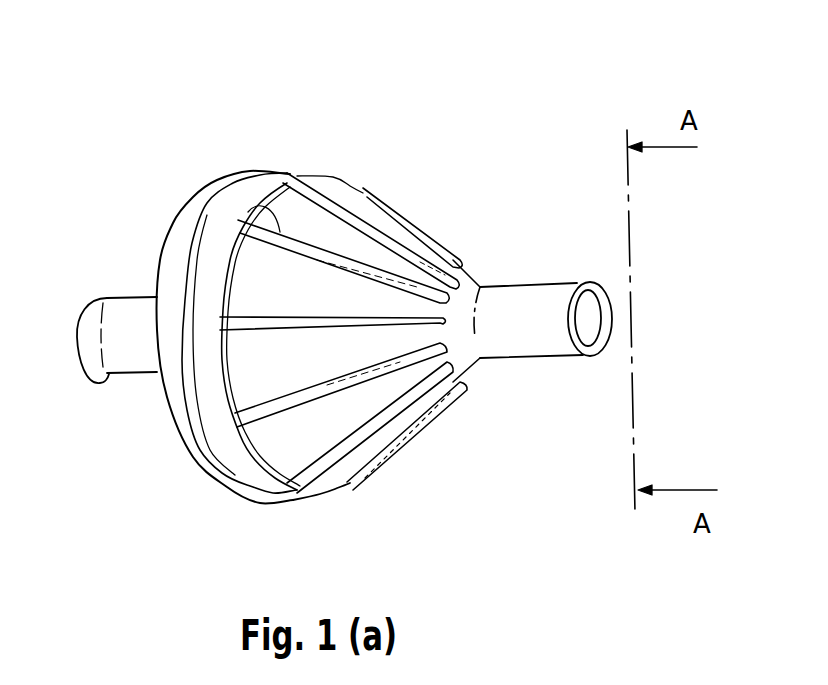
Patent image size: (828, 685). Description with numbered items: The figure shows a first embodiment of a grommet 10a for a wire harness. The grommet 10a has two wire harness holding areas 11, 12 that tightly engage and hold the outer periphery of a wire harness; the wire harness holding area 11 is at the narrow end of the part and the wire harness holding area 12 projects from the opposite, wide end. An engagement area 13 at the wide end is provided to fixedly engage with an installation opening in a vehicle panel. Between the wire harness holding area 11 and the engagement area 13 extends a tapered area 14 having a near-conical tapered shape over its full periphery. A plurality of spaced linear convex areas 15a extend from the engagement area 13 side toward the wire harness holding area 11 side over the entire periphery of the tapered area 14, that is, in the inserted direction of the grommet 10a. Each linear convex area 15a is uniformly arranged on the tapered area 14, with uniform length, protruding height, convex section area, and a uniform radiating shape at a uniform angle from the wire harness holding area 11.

The grommet 10a is at (342, 301).
The wire harness holding area 11 is at (530, 358).
The wire harness holding area 12 is at (125, 298).
The engagement area 13 is at (233, 483).
The tapered area 14 is at (344, 186).
The linear convex area 15a is at (222, 184).